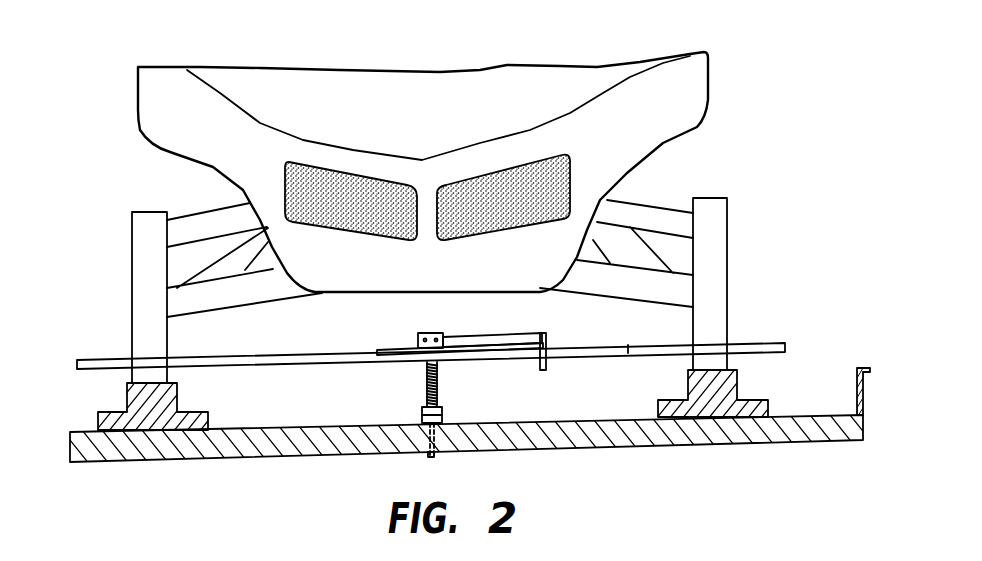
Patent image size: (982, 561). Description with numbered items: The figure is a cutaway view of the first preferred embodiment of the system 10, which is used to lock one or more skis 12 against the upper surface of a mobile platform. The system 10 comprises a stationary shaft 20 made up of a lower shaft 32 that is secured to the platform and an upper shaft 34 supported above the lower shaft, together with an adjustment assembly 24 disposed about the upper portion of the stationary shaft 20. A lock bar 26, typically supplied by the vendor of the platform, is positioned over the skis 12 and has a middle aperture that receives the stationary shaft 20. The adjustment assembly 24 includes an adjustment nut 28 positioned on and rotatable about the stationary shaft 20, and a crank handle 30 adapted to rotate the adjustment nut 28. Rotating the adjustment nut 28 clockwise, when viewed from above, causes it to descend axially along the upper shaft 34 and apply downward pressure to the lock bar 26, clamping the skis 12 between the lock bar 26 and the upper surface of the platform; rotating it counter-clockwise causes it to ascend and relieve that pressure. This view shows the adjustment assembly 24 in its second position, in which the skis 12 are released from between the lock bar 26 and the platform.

The system 10 is at (712, 174).
The skis 12 is at (140, 397).
The stationary shaft 20 is at (425, 387).
The adjustment assembly 24 is at (456, 321).
The lock bar 26 is at (118, 357).
The adjustment nut 28 is at (416, 335).
The crank handle 30 is at (568, 343).
The lower shaft 32 is at (413, 437).
The upper shaft 34 is at (437, 372).